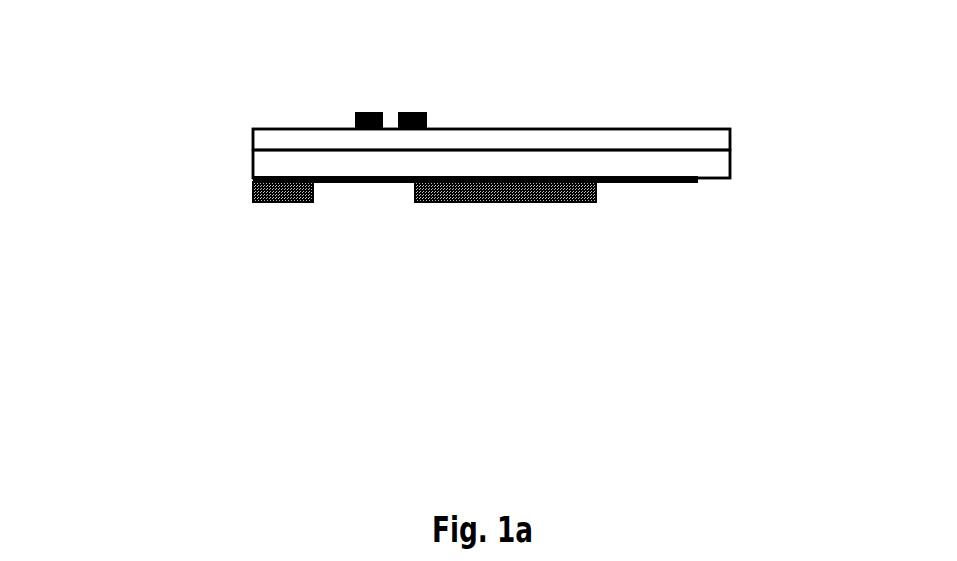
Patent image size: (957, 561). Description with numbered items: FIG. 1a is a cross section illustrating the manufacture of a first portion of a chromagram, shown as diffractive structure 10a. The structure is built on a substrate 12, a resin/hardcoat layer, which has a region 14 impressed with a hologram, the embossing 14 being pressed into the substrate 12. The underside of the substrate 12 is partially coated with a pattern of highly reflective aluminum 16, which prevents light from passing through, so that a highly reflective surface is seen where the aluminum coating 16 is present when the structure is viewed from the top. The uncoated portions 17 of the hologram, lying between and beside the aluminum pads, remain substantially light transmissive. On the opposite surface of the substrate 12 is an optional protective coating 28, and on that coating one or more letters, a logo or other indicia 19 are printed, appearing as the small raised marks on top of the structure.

The diffractive structure 10a is at (174, 85).
The substrate 12 is at (714, 166).
The region impressed with a hologram 14 is at (325, 164).
The highly reflective aluminum 16 is at (517, 216).
The uncoated portions 17 is at (375, 229).
The indicia 19 is at (436, 100).
The protective coating 28 is at (669, 126).